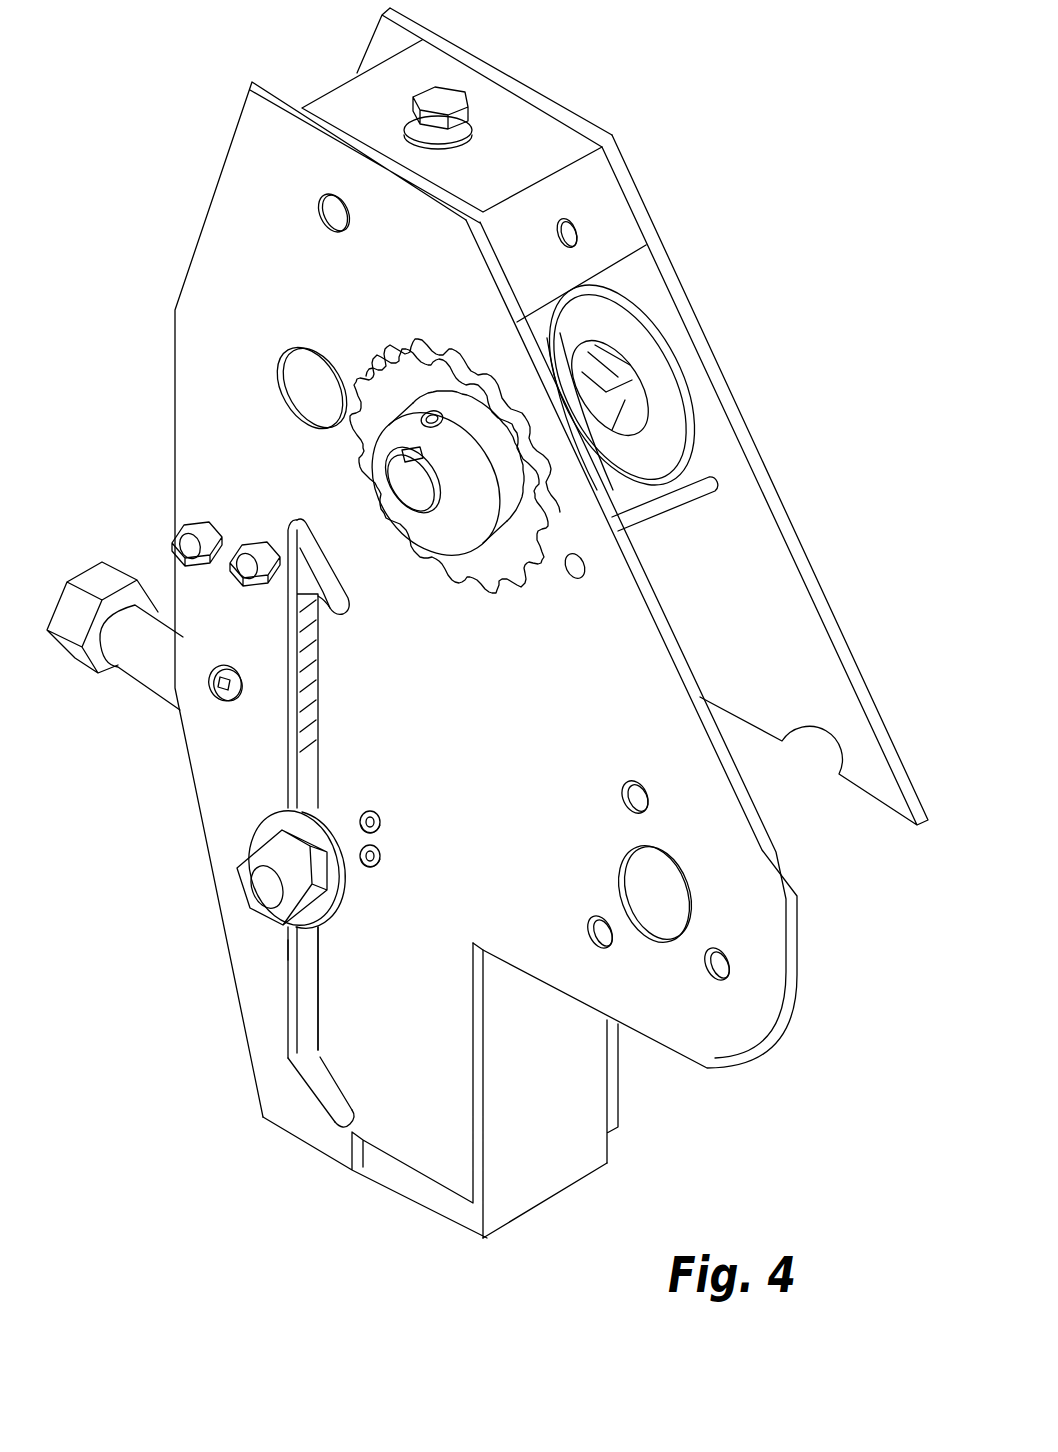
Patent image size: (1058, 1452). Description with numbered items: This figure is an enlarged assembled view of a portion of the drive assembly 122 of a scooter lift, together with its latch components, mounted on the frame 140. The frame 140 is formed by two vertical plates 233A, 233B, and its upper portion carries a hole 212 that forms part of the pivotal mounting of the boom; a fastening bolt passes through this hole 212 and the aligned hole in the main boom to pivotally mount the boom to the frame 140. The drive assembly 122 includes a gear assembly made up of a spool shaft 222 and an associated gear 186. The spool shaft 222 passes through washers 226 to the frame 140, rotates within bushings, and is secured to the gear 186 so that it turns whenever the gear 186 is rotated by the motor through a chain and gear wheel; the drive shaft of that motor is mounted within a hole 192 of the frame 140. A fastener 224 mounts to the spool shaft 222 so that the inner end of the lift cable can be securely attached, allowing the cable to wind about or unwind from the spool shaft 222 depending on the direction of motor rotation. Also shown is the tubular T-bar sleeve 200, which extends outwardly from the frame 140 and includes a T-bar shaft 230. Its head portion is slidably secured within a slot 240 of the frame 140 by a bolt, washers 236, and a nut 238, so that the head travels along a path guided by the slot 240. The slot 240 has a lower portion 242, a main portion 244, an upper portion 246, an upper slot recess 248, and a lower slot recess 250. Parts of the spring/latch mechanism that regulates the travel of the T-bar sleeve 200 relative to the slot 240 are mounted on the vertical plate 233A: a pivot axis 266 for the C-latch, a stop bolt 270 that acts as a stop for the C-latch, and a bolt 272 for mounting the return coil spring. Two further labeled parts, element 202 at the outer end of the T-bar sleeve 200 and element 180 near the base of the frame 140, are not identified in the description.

The drive assembly 122 is at (632, 83).
The hole 212 is at (320, 208).
The gear 186 is at (398, 352).
The fastener 224 is at (590, 366).
The washers 226 is at (655, 348).
The spool shaft 222 is at (622, 438).
The bolt 272 is at (177, 538).
The pivot axis 266 is at (234, 555).
The upper portion 246 is at (303, 522).
The upper slot recess 248 is at (350, 594).
The nut 202 is at (92, 575).
The T-bar sleeve 200 is at (147, 682).
The stop bolt 270 is at (224, 666).
The T-bar shaft 230 is at (296, 816).
The nut 238 is at (250, 858).
The washers 236 is at (342, 878).
The slot 240 is at (323, 945).
The main portion 244 is at (322, 988).
The lower portion 242 is at (297, 1080).
The lower slot recess 250 is at (342, 1097).
The vertical plate 233A is at (455, 1136).
The vertical plate 233B is at (620, 1077).
The frame 140 is at (496, 1098).
The base 180 is at (500, 1232).
The hole 192 is at (685, 882).